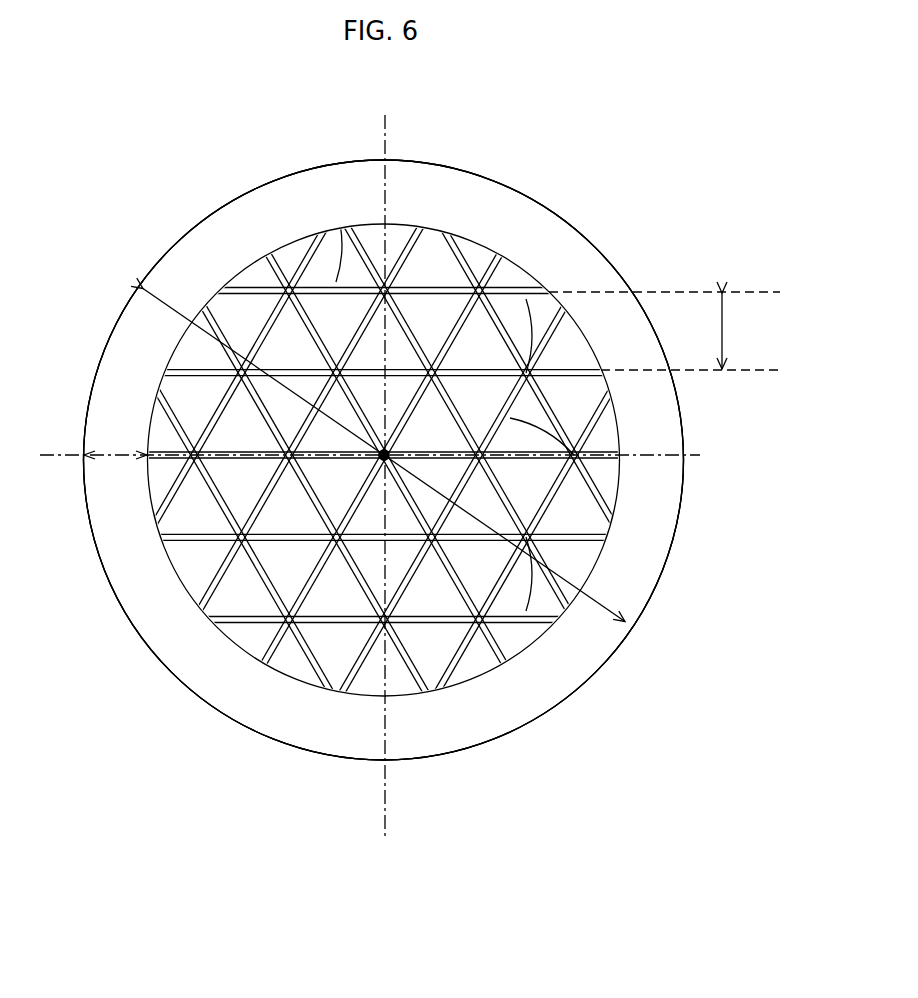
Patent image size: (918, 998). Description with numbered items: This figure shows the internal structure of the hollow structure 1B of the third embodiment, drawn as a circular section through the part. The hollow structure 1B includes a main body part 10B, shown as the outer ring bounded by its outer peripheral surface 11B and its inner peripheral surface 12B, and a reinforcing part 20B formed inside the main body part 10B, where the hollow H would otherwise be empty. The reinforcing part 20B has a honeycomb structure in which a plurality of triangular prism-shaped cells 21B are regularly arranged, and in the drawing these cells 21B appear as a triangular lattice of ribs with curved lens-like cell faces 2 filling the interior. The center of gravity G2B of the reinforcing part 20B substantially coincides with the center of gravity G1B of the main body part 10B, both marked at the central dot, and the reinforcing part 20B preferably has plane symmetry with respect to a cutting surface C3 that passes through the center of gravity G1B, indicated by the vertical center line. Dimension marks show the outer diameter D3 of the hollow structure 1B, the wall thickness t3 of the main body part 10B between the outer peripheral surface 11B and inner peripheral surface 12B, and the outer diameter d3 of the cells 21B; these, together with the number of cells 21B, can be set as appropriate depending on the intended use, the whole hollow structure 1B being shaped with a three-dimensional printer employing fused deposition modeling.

The hollow structure 1B is at (483, 151).
The lens cell 2 is at (454, 281).
The main body part 10B is at (593, 277).
The outer peripheral edge 11B is at (684, 456).
The lens cell region 12B is at (589, 509).
The reinforcing part 20B is at (408, 470).
The triangular prism-shaped cells 21B is at (332, 292).
The center of gravity of the main body part G1B is at (384, 455).
The center of gravity of the reinforcing part G2B is at (384, 455).
The hollow H is at (527, 603).
The outer diameter of the hollow structure D3 is at (384, 455).
The outer diameter of the cells d3 is at (664, 331).
The wall thickness of the main body part t3 is at (370, 445).
The cutting surface C3 is at (385, 802).